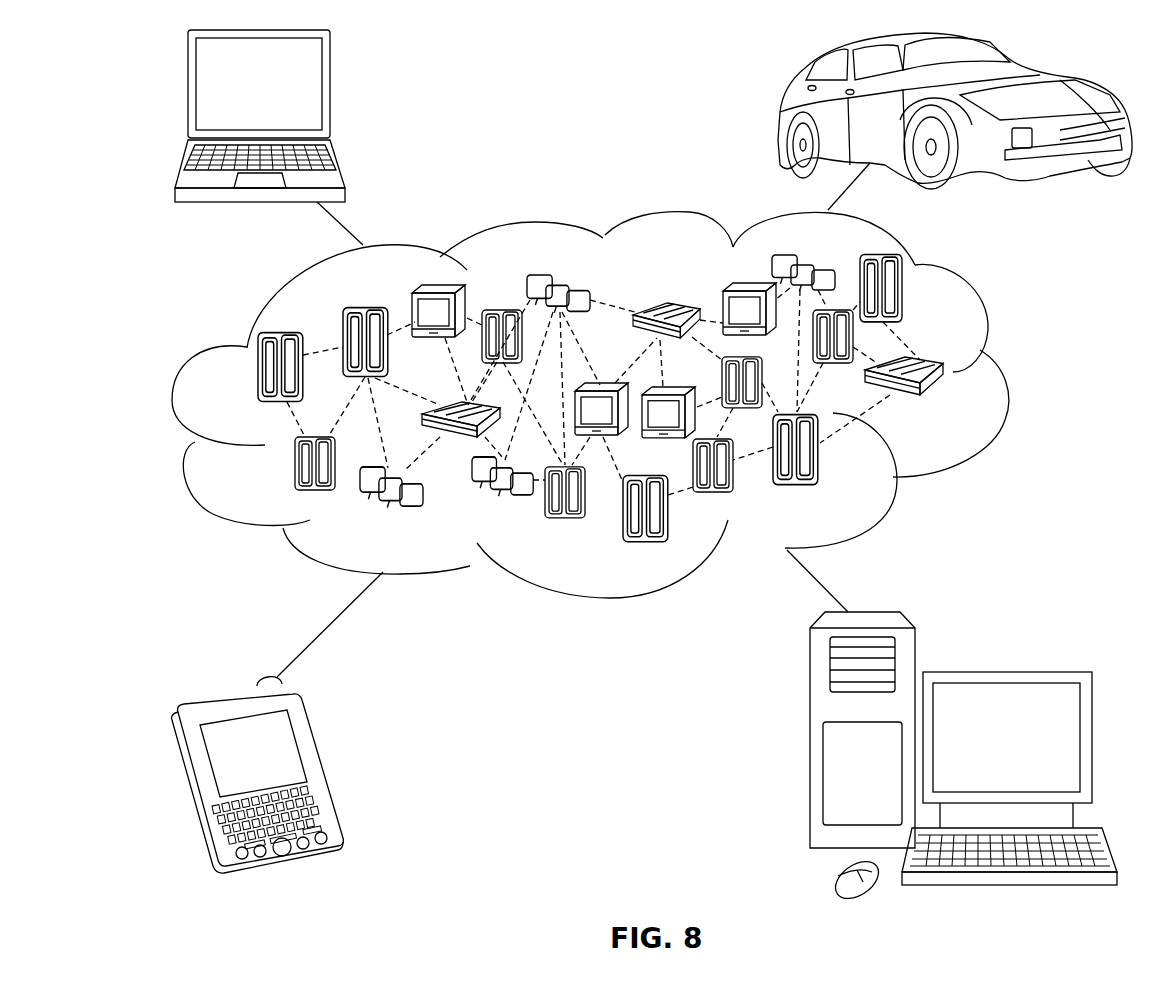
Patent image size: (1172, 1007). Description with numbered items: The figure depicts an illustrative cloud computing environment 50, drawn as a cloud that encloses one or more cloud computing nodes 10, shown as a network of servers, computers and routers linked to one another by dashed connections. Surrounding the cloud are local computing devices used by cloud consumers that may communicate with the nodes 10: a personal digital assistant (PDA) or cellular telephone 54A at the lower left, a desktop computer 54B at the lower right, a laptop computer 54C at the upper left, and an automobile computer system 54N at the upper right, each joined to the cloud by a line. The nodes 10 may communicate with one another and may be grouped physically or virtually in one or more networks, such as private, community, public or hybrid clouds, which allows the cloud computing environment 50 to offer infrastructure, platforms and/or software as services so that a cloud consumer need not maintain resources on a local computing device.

The cloud computing nodes 10 is at (948, 411).
The cloud computing environment 50 is at (1005, 375).
The personal digital assistant (PDA) or cellular telephone 54A is at (318, 770).
The desktop computer 54B is at (1003, 670).
The laptop computer 54C is at (332, 97).
The automobile computer system 54N is at (780, 108).